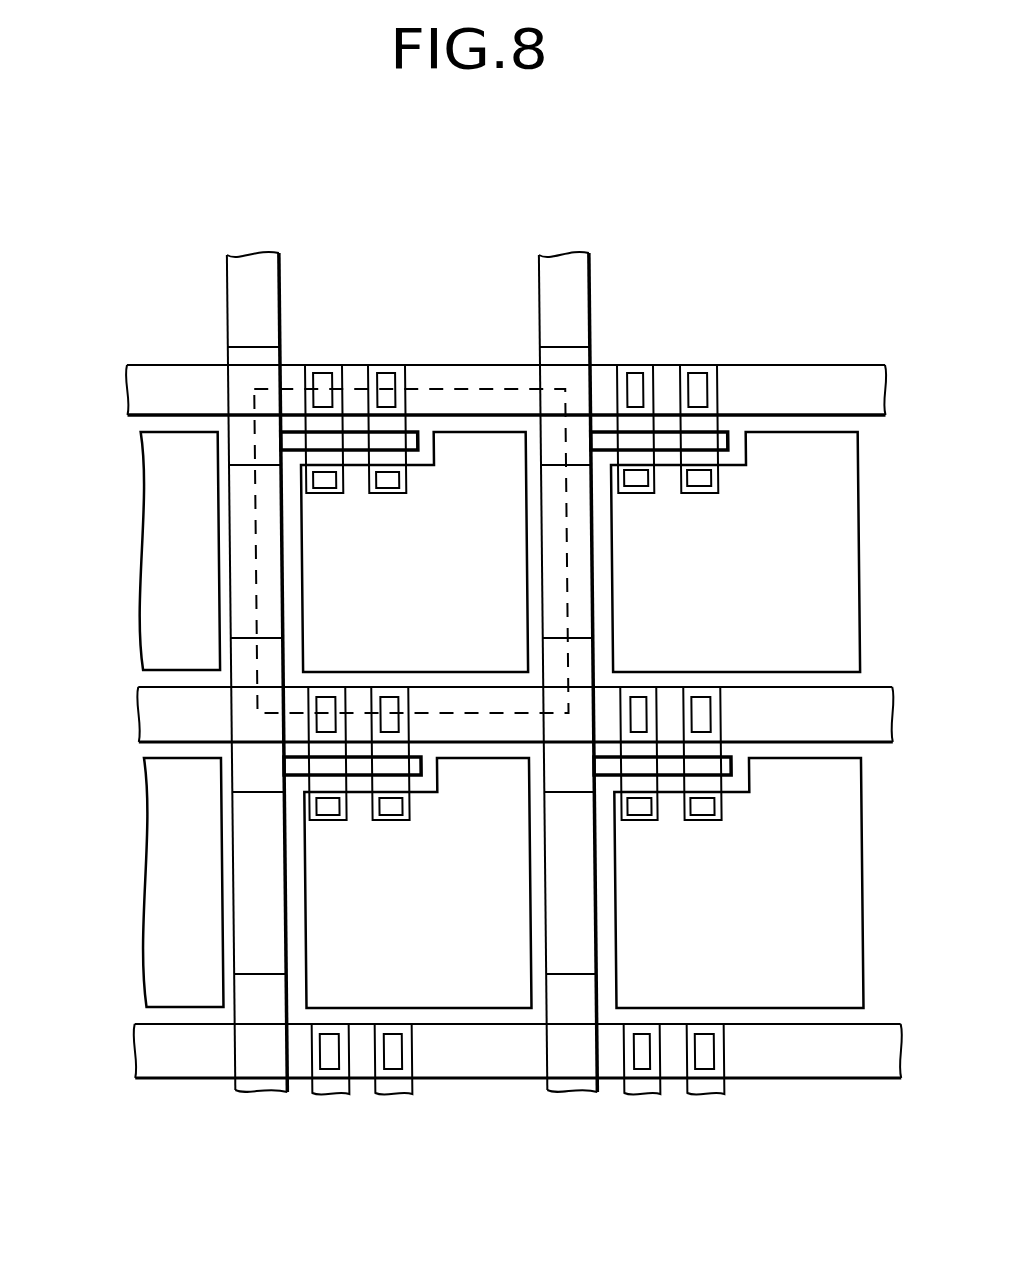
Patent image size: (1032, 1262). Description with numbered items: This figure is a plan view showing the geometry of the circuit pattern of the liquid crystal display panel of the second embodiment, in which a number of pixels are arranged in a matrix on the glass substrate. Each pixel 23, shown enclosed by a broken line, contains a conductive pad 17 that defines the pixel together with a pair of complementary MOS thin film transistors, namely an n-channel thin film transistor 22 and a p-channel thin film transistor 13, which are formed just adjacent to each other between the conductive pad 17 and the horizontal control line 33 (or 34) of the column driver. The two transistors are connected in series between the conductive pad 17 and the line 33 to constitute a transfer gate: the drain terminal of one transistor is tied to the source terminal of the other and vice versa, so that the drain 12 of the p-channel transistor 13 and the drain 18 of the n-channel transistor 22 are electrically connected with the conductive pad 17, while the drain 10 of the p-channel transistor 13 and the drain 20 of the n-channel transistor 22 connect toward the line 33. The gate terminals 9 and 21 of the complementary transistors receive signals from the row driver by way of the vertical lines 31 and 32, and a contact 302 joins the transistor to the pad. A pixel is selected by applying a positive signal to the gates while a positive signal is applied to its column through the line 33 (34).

The data line 31 is at (277, 252).
The data line 32 is at (587, 252).
The control line 33 is at (125, 387).
The control line 34 is at (137, 707).
The p-channel thin film transistor 13 is at (338, 347).
The n-channel thin film transistor 22 is at (403, 347).
The pixel 23 is at (449, 388).
The contact hole 302 is at (405, 478).
The gate terminal 9 is at (323, 438).
The gate terminal 21 is at (390, 438).
The drain 12 is at (637, 458).
The drain 10 is at (640, 422).
The drain 18 is at (702, 458).
The drain 20 is at (706, 424).
The conductive pad 17 is at (857, 503).